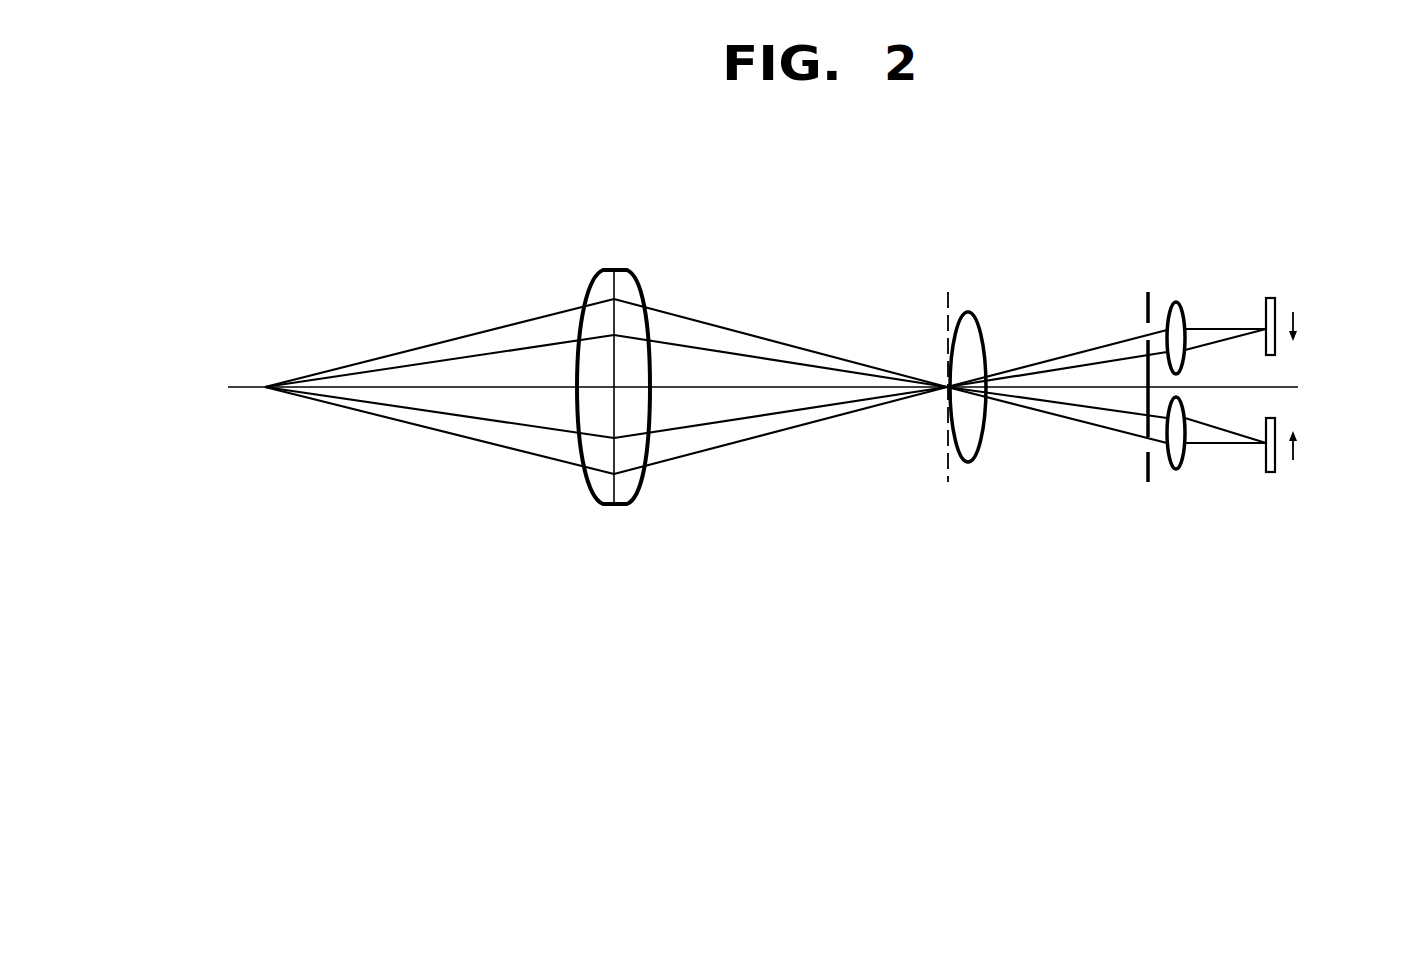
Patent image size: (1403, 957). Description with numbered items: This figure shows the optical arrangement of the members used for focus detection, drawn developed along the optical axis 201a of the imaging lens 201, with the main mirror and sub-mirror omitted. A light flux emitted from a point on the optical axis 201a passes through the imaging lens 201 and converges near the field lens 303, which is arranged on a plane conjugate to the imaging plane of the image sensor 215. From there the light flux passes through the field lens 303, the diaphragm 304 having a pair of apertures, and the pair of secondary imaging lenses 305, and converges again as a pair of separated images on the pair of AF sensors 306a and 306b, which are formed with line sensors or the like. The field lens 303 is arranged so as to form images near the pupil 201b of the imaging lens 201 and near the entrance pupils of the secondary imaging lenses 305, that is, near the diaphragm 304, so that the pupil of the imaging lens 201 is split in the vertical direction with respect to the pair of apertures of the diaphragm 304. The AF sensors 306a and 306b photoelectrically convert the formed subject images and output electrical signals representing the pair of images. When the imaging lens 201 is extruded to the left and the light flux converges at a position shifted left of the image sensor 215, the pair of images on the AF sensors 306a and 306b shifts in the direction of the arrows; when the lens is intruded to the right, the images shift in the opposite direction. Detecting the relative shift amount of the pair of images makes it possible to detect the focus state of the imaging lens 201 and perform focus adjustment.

The imaging lens 201 is at (603, 268).
The optical axis 201a is at (500, 386).
The pupil 201b is at (616, 325).
The image sensor 215 is at (947, 300).
The field lens 303 is at (968, 311).
The diaphragm 304 is at (1145, 302).
The secondary imaging lenses 305 is at (1178, 302).
The AF sensor 306a is at (1272, 298).
The AF sensor 306b is at (1270, 473).